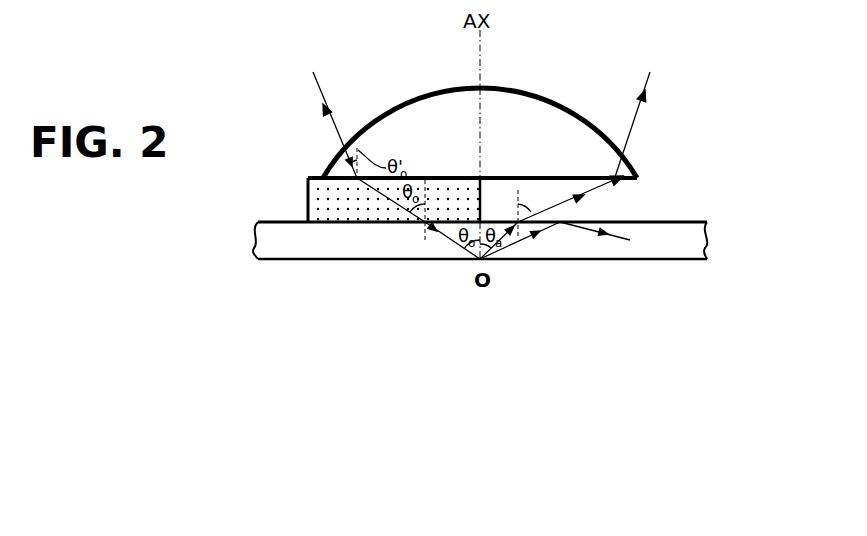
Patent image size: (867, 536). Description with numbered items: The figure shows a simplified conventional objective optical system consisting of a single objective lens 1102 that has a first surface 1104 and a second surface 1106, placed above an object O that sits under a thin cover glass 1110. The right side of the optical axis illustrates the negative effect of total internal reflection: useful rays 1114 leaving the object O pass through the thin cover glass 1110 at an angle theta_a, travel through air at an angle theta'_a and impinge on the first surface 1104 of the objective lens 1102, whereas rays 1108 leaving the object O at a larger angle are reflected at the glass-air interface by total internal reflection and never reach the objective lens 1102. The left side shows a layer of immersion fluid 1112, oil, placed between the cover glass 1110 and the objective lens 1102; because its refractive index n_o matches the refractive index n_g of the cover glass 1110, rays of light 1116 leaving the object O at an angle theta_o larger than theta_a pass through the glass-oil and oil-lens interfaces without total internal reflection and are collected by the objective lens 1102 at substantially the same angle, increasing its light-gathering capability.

The objective lens 1102 is at (403, 118).
The first surface 1104 is at (623, 190).
The second surface 1106 is at (586, 127).
The rays 1108 is at (585, 223).
The thin cover glass 1110 is at (683, 247).
The layer of immersion fluid 1112 is at (307, 200).
The useful rays 1114 is at (634, 117).
The rays of light 1116 is at (320, 92).